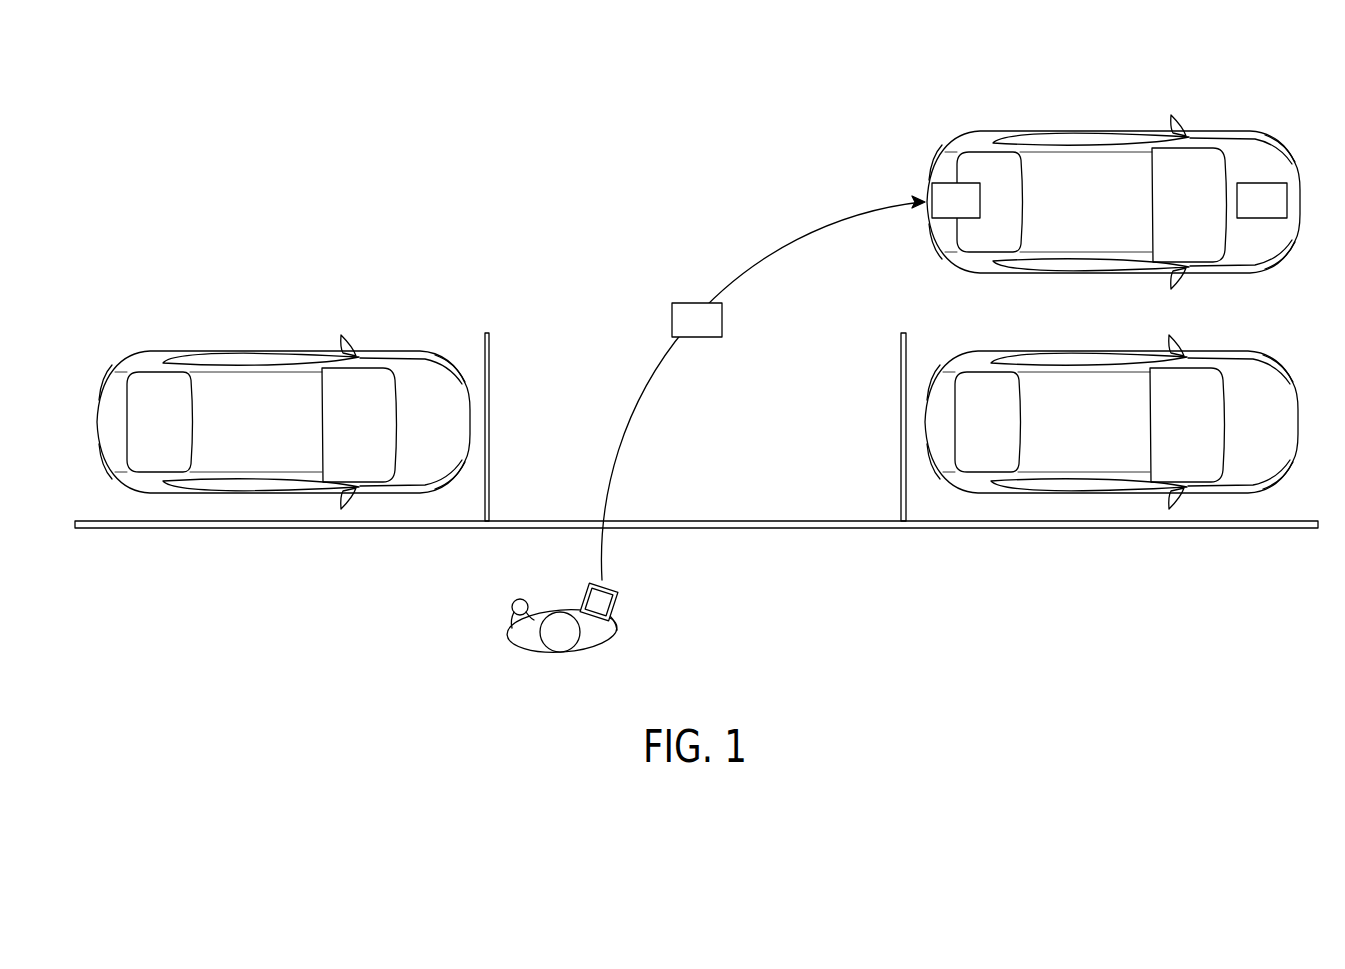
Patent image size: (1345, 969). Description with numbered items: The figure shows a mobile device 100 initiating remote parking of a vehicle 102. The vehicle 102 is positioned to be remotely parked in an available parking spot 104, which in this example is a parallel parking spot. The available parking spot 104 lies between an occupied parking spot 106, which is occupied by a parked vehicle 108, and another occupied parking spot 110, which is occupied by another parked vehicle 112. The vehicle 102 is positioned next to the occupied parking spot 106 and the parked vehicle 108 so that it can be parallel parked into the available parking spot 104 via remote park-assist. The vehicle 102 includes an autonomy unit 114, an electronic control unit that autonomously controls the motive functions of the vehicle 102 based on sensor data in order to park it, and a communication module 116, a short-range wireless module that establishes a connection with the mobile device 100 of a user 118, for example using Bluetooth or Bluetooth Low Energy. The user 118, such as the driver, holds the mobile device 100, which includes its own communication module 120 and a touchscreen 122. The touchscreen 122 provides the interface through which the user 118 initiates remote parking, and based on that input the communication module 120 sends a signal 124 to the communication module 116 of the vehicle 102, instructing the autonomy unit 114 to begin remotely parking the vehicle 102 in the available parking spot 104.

The mobile device 100 is at (604, 582).
The vehicle 102 is at (1095, 126).
The available parking spot 104 is at (745, 439).
The occupied parking spot 106 is at (261, 494).
The parked vehicle 108 is at (268, 430).
The occupied parking spot 110 is at (1089, 494).
The parked vehicle 112 is at (1098, 430).
The autonomy unit 114 is at (1279, 212).
The communication module 116 is at (973, 212).
The user 118 is at (526, 637).
The communication module 120 is at (588, 583).
The touchscreen 122 is at (594, 602).
The signal 124 is at (714, 331).